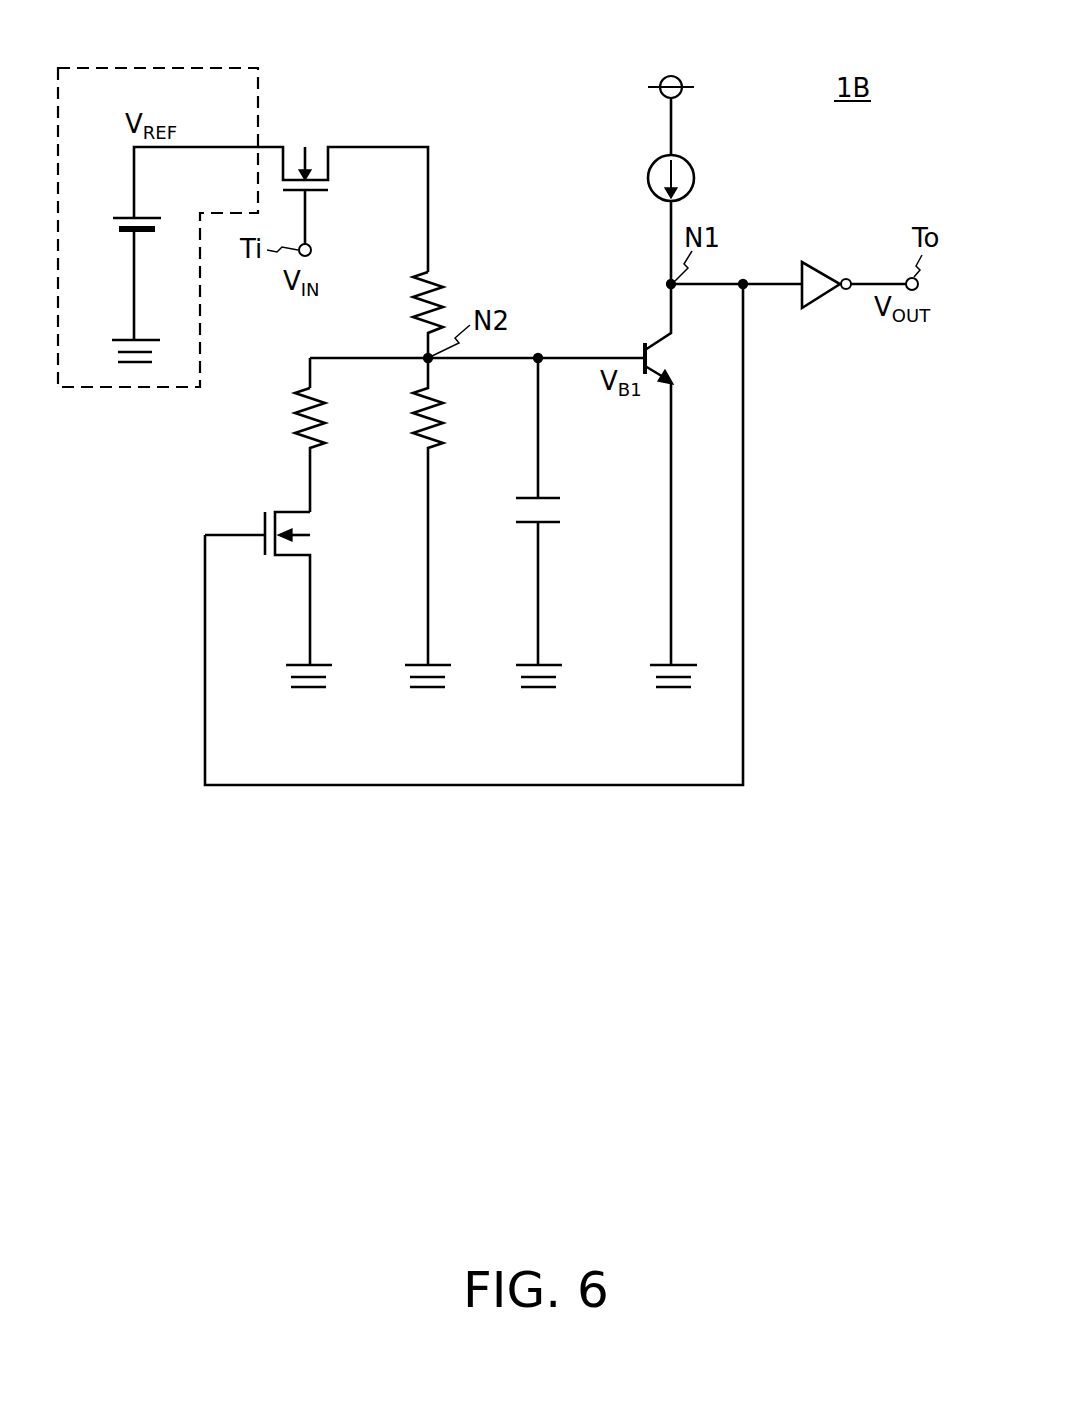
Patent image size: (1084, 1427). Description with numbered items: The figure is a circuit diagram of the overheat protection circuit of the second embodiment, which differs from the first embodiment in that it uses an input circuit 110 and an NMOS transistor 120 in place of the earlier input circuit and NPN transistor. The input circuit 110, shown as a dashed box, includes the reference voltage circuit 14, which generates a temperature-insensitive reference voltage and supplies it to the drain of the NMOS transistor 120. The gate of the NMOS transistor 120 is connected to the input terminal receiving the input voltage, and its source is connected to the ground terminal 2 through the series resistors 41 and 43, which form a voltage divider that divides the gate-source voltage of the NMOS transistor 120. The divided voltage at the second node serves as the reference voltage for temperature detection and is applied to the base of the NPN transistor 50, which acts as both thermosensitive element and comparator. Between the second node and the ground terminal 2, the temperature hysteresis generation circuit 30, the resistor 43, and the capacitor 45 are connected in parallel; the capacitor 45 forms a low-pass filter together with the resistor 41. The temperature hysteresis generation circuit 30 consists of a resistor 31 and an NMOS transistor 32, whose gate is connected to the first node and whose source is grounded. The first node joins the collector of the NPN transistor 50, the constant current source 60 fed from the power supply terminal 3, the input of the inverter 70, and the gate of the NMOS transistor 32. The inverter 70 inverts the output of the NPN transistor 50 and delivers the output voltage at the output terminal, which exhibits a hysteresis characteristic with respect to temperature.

The ground terminal 2 is at (392, 492).
The power supply terminal 3 is at (653, 91).
The reference voltage circuit 14 is at (121, 253).
The temperature hysteresis generation circuit 30 is at (251, 499).
The resistor 31 is at (281, 430).
The NMOS transistor 32 is at (257, 558).
The resistor 41 is at (443, 286).
The resistor 43 is at (410, 511).
The capacitor 45 is at (550, 511).
The NPN transistor 50 is at (641, 472).
The constant current source 60 is at (704, 215).
The inverter 70 is at (854, 265).
The input circuit 110 is at (158, 198).
The NMOS transistor 120 is at (323, 166).